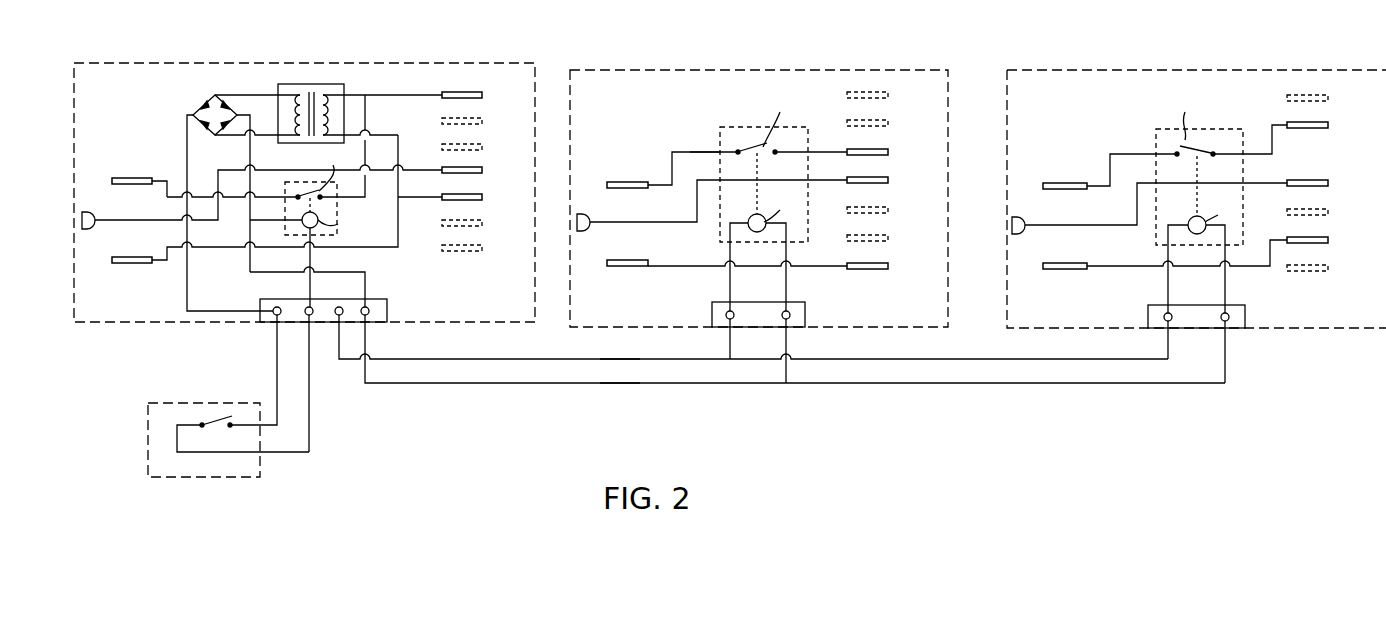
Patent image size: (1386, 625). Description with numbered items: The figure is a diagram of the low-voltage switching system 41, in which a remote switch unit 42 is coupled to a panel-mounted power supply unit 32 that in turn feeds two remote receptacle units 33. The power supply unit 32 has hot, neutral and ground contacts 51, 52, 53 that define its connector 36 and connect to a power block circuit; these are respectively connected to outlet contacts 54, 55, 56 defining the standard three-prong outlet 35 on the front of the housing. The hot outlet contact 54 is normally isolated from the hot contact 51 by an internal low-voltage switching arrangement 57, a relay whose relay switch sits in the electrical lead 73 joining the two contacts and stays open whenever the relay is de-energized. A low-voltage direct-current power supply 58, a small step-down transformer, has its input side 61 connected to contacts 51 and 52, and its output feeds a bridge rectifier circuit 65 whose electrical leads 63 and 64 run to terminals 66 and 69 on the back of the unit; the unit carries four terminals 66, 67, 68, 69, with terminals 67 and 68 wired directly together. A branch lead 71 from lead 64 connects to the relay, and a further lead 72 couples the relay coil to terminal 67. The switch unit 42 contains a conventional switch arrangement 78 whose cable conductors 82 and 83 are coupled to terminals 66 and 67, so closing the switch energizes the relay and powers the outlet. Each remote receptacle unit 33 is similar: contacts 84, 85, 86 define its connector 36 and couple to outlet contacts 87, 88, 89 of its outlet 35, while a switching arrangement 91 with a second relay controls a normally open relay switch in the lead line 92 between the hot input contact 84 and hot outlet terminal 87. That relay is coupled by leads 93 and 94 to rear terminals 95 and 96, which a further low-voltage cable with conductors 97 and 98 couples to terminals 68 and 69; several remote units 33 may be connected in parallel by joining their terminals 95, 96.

The power supply unit 32 is at (233, 62).
The remote receptacle unit 33 is at (661, 69).
The electrical outlet 35 is at (96, 150).
The connector 36 is at (469, 89).
The low-voltage switching system 41 is at (713, 397).
The remote switch unit 42 is at (208, 480).
The hot contact 51 is at (486, 93).
The neutral contact 52 is at (482, 201).
The ground contact 53 is at (482, 170).
The hot outlet contact 54 is at (134, 176).
The neutral outlet contact 55 is at (136, 264).
The ground outlet contact 56 is at (95, 229).
The low-voltage switching arrangement 57 is at (338, 235).
The low-voltage direct-current power supply 58 is at (308, 82).
The transformer input side 61 is at (330, 112).
The electrical lead 63 is at (187, 127).
The electrical lead 64 is at (250, 153).
The bridge rectifier circuit 65 is at (198, 110).
The terminal 66 is at (274, 316).
The terminal 67 is at (306, 318).
The terminal 68 is at (338, 318).
The terminal 69 is at (367, 318).
The branch lead 71 is at (256, 213).
The lead 72 is at (300, 272).
The electrical lead 73 is at (370, 108).
The switch arrangement 78 is at (232, 417).
The electrical conductor 82 is at (278, 403).
The electrical conductor 83 is at (309, 432).
The hot input contact 84 is at (888, 150).
The neutral contact 85 is at (888, 262).
The ground contact 86 is at (888, 178).
The hot outlet terminal 87 is at (632, 180).
The outlet contact 88 is at (625, 266).
The outlet contact 89 is at (590, 232).
The switching arrangement 91 is at (746, 126).
The lead line 92 is at (700, 152).
The lead 93 is at (728, 286).
The lead 94 is at (790, 283).
The terminal 95 is at (728, 321).
The terminal 96 is at (788, 321).
The conductor 97 is at (600, 363).
The conductor 98 is at (650, 386).